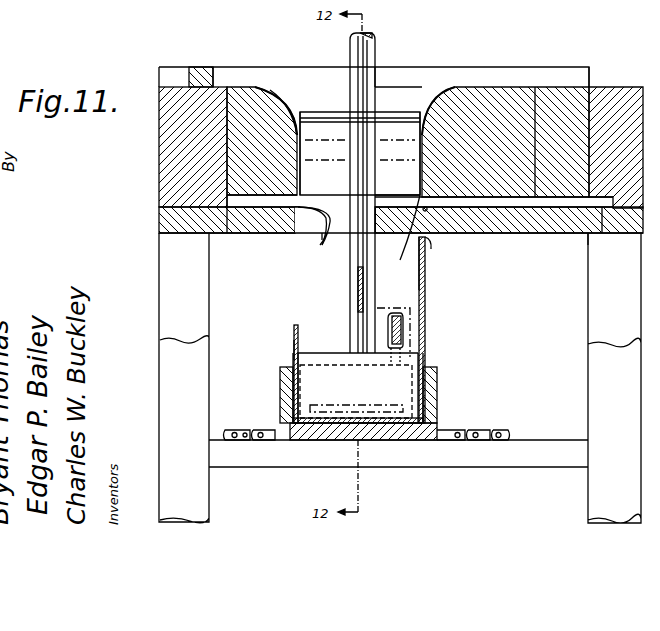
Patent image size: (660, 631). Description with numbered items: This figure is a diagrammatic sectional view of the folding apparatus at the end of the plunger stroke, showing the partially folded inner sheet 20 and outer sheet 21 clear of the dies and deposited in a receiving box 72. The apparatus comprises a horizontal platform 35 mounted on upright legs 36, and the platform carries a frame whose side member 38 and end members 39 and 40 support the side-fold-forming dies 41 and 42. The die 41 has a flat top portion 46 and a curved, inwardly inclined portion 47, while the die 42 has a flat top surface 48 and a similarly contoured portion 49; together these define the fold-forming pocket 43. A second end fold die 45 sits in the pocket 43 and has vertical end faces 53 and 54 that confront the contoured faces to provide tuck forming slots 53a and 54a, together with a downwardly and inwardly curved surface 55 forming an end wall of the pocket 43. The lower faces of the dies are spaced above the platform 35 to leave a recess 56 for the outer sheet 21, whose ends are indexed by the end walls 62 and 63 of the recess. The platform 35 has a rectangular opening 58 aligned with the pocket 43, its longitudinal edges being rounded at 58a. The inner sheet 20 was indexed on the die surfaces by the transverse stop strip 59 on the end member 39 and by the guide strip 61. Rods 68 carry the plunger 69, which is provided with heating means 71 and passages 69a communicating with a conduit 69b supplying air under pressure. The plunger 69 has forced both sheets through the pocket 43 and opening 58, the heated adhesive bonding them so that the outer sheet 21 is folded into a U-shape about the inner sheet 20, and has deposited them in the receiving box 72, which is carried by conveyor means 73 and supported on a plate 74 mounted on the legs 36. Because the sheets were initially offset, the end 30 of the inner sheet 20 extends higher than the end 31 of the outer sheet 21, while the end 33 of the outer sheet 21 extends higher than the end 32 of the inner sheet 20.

The inner sheet 20 is at (418, 300).
The outer sheet 21 is at (426, 313).
The leading end of inner sheet 30 is at (294, 332).
The leading end of outer sheet 31 is at (293, 352).
The trailing end of inner sheet 32 is at (432, 240).
The trailing end of outer sheet 33 is at (418, 262).
The horizontal platform 35 is at (160, 215).
The upright legs 36 is at (162, 380).
The side member 38 is at (417, 72).
The end member 39 is at (162, 150).
The end member 40 is at (621, 88).
The side-fold-forming die 41 is at (264, 90).
The side-fold-forming die 42 is at (537, 92).
The fold-forming pocket 43 is at (391, 100).
The second end fold die 45 is at (324, 117).
The flat top portion 46 is at (236, 88).
The curved and inwardly inclined portion 47 is at (283, 93).
The flat top surface 48 is at (497, 88).
The curved and inclined portion 49 is at (446, 95).
The vertical end face 53 is at (301, 113).
The tuck forming slot 53a is at (326, 236).
The vertical end face 54 is at (420, 115).
The tuck forming slot 54a is at (412, 225).
The downwardly and inwardly curved surface 55 is at (396, 197).
The recess 56 is at (548, 200).
The rectangular opening 58 is at (300, 235).
The rounded edges 58a is at (312, 226).
The transverse stop strip 59 is at (194, 70).
The guide strip 61 is at (592, 70).
The end wall of recess 62 is at (240, 220).
The end wall of recess 63 is at (598, 234).
The rods 68 is at (356, 288).
The plunger 69 is at (326, 352).
The passages 69a is at (280, 382).
The conduit 69b is at (403, 333).
The heating means 71 is at (390, 400).
The receiving box 72 is at (438, 400).
The conveyor means 73 is at (490, 432).
The plate 74 is at (523, 452).